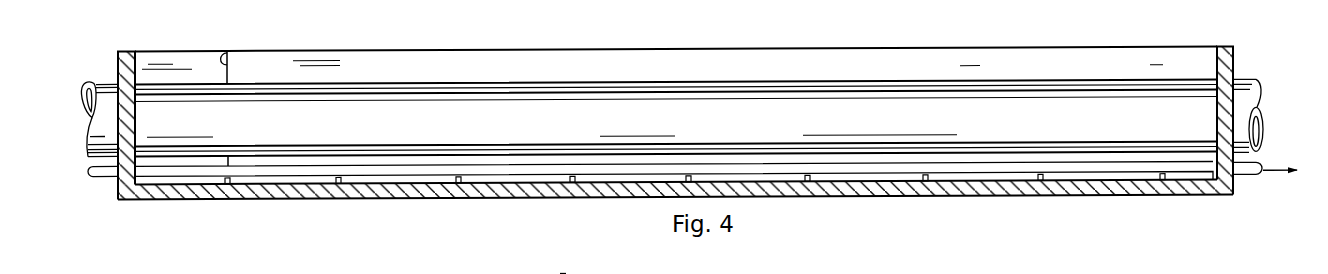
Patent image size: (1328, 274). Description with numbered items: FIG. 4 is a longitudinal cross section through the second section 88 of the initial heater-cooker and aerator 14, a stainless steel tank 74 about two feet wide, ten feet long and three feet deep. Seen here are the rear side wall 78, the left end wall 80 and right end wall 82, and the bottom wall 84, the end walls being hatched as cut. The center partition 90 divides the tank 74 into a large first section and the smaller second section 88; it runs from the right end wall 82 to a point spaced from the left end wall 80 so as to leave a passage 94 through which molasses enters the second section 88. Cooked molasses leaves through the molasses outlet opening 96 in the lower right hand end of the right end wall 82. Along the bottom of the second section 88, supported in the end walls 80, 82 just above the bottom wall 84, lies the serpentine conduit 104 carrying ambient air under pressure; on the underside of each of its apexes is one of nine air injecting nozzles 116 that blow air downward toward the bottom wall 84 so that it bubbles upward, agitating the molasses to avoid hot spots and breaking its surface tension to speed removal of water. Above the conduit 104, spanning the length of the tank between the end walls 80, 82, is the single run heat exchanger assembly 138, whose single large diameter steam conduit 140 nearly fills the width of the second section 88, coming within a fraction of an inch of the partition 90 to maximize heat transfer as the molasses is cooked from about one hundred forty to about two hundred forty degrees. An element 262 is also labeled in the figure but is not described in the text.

The initial heater-cooker and aerator 14 is at (877, 212).
The tank 74 is at (214, 50).
The rear side wall 78 is at (163, 52).
The left end wall 80 is at (117, 60).
The right end wall 82 is at (1233, 63).
The bottom wall 84 is at (440, 197).
The second section 88 is at (905, 67).
The center partition 90 is at (660, 78).
The passage or outlet opening 94 is at (229, 52).
The molasses outlet opening 96 is at (1232, 192).
The serpentine conduit 104 is at (329, 186).
The air injecting nozzle 116 is at (227, 183).
The single run heat exchanger assembly 138 is at (700, 122).
The heat exchanger conduit 140 is at (800, 82).
The mounting element 262 is at (563, 273).